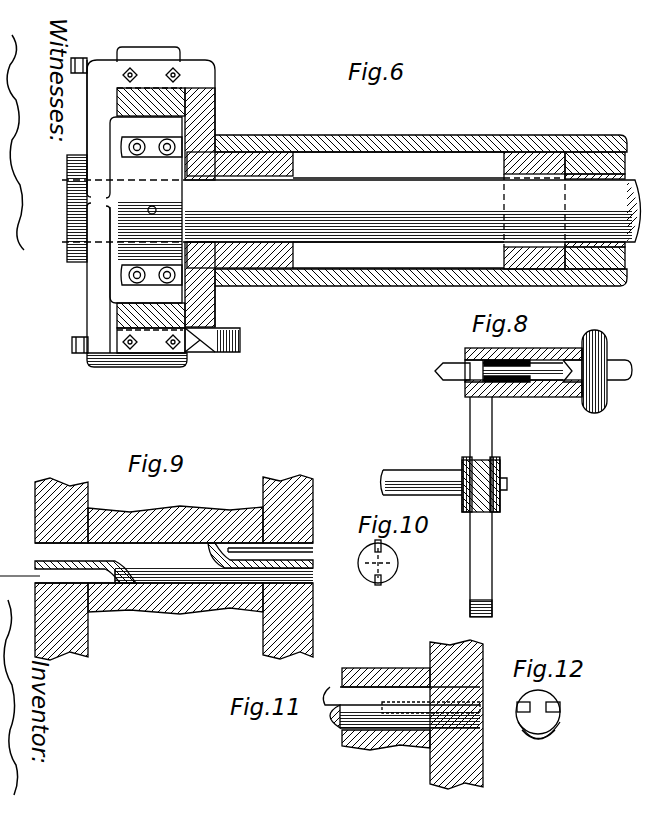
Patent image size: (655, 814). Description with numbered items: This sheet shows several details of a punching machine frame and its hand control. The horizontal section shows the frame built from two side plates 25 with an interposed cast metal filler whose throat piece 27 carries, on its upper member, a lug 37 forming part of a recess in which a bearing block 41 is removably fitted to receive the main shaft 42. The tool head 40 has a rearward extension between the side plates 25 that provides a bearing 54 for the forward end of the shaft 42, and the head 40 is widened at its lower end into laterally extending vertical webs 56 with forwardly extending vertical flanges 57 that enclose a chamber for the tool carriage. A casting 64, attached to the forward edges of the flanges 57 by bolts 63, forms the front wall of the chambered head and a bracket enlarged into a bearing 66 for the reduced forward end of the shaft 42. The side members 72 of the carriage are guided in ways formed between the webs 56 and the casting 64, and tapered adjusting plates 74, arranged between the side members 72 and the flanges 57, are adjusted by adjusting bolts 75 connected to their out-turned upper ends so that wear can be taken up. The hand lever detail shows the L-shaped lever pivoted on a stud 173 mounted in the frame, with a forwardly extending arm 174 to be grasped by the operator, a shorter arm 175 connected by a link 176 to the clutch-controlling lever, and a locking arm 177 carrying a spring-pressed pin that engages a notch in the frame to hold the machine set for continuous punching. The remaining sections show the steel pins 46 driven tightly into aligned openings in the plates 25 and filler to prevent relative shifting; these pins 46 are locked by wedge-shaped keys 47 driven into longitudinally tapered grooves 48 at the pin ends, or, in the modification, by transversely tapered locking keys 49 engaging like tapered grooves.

In FIG. 6, the side plates 25 is at (412, 135).
In FIG. 9, the side plates 25 is at (58, 466).
In FIG. 11, the side plates 25 is at (440, 642).
In FIG. 9, the throat piece 27 is at (168, 506).
In FIG. 11, the throat piece 27 is at (378, 746).
In FIG. 6, the lug 37 is at (512, 152).
In FIG. 6, the tool head 40 is at (217, 136).
In FIG. 6, the bearing block 41 is at (583, 152).
In FIG. 6, the main shaft 42 is at (398, 210).
In FIG. 9, the steel pins 46 is at (313, 566).
In FIG. 10, the steel pins 46 is at (358, 567).
In FIG. 11, the steel pins 46 is at (340, 727).
In FIG. 12, the steel pins 46 is at (545, 690).
In FIG. 9, the locking keys 47 is at (306, 550).
In FIG. 10, the locking keys 47 is at (382, 546).
In FIG. 9, the tapered grooves 48 is at (226, 545).
In FIG. 11, the locking keys 49 is at (392, 702).
In FIG. 12, the locking keys 49 is at (542, 748).
In FIG. 6, the bearing 54 is at (278, 160).
In FIG. 6, the vertical webs 56 is at (215, 106).
In FIG. 6, the vertical flanges 57 is at (164, 66).
In FIG. 6, the bolts 63 is at (72, 347).
In FIG. 6, the casting 64 is at (98, 291).
In FIG. 6, the bearing 66 is at (80, 256).
In FIG. 6, the side members 72 is at (117, 104).
In FIG. 8, the side members 72 is at (654, 470).
In FIG. 6, the tapered adjusting plates 74 is at (190, 82).
In FIG. 6, the adjusting bolts 75 is at (131, 68).
In FIG. 8, the stud 173 is at (425, 464).
In FIG. 8, the arm 174 is at (480, 476).
In FIG. 8, the shorter arm 175 is at (490, 538).
In FIG. 8, the link 176 is at (468, 368).
In FIG. 8, the locking arm 177 is at (488, 410).